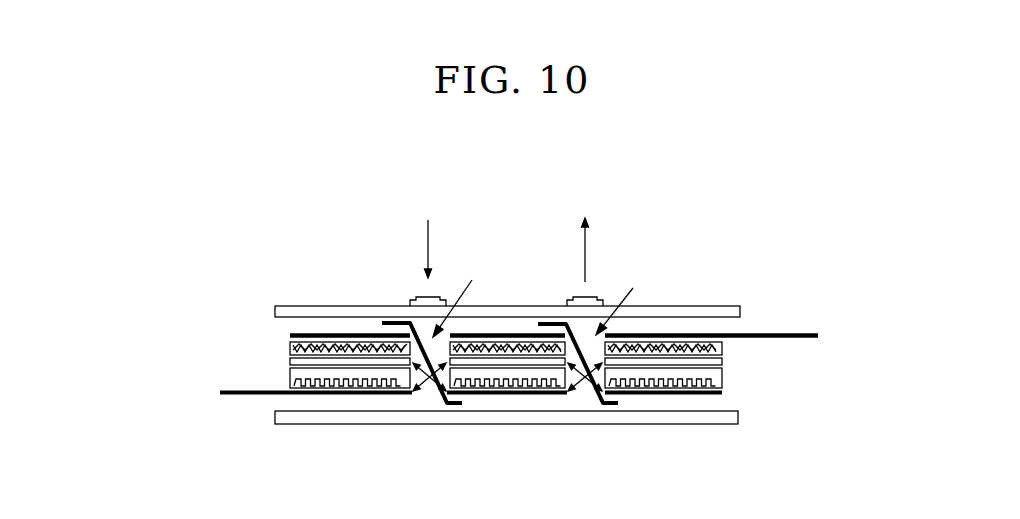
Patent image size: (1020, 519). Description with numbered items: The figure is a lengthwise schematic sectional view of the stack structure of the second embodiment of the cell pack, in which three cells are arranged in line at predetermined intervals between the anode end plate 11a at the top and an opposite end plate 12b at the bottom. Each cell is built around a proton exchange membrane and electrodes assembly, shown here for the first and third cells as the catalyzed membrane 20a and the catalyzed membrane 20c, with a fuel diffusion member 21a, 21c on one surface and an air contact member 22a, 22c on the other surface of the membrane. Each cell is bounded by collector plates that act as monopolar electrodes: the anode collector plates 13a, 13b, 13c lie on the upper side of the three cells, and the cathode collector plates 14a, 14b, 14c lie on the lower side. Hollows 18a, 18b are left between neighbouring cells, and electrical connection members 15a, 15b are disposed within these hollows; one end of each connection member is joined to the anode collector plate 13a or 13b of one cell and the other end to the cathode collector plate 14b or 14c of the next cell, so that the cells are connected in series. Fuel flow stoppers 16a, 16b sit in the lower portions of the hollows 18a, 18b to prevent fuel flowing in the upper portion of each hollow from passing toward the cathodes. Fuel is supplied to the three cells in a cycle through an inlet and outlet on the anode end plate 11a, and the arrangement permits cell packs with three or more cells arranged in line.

The anode end plate 11a is at (740, 312).
The lower housing plate 12b is at (738, 421).
The anode collector plate 13a is at (290, 334).
The anode collector plate 13b is at (515, 333).
The anode collector plate 13c is at (818, 335).
The cathode collector plate 14a is at (233, 394).
The cathode collector plate 14b is at (508, 396).
The cathode collector plate 14c is at (722, 393).
The electrical connection member 15a is at (393, 323).
The electrical connection member 15b is at (552, 324).
The fuel flow stopper 16a is at (438, 397).
The fuel flow stopper 16b is at (593, 398).
The hollow 18a is at (463, 295).
The hollow 18b is at (638, 303).
The proton exchange membrane and electrodes assembly 20a is at (290, 360).
The proton exchange membrane and electrodes assembly 20c is at (722, 361).
The fuel diffusion member 21a is at (290, 346).
The fuel diffusion member 21c is at (722, 348).
The air contact member 22a is at (290, 379).
The air contact member 22c is at (722, 378).